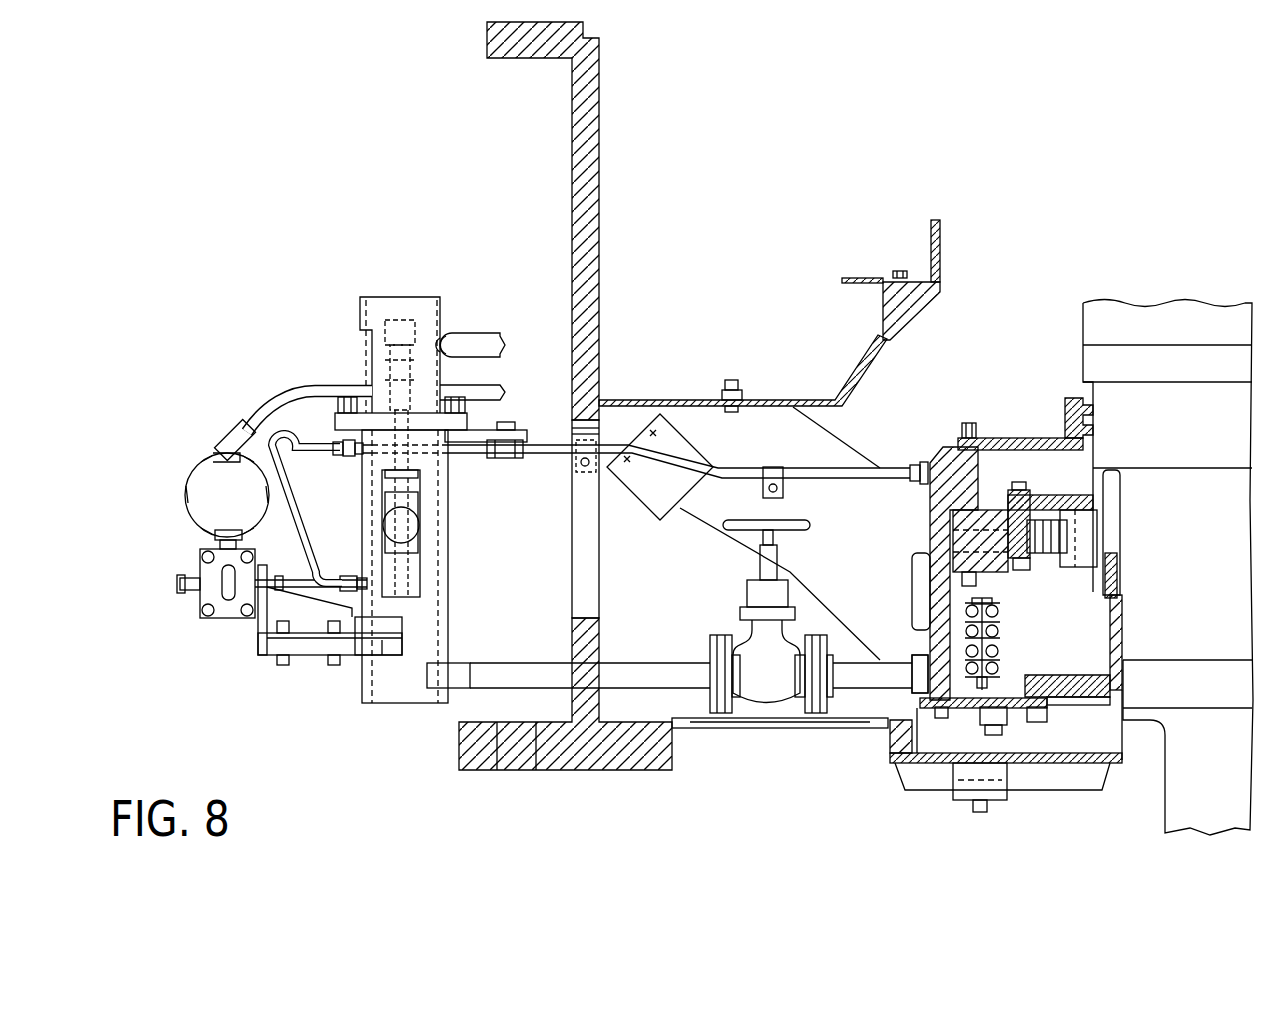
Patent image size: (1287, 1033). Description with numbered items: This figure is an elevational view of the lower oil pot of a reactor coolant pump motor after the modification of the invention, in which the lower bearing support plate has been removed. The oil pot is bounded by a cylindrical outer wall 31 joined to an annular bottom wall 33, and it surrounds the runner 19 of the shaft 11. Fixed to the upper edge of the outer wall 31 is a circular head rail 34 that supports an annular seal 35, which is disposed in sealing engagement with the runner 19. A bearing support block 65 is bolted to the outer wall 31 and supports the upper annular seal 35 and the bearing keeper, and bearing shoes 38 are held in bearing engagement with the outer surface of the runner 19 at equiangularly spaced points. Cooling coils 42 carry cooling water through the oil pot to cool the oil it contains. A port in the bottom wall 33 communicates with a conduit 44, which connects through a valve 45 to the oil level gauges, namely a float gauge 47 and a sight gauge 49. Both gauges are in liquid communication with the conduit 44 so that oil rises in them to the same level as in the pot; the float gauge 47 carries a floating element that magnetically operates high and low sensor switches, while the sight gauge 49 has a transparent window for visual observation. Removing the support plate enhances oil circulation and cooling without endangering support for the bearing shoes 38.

The shaft 11 is at (1196, 438).
The runner 19 is at (1093, 482).
The outer wall 31 is at (928, 648).
The bottom wall 33 is at (1035, 675).
The head rail 34 is at (932, 452).
The annular seal 35 is at (1063, 435).
The bearing shoes 38 is at (1075, 540).
The cooling coils 42 is at (1000, 635).
The conduit 44 is at (848, 678).
The valve 45 is at (760, 693).
The float gauge 47 is at (448, 540).
The sight gauge 49 is at (181, 480).
The bearing support block 65 is at (992, 510).